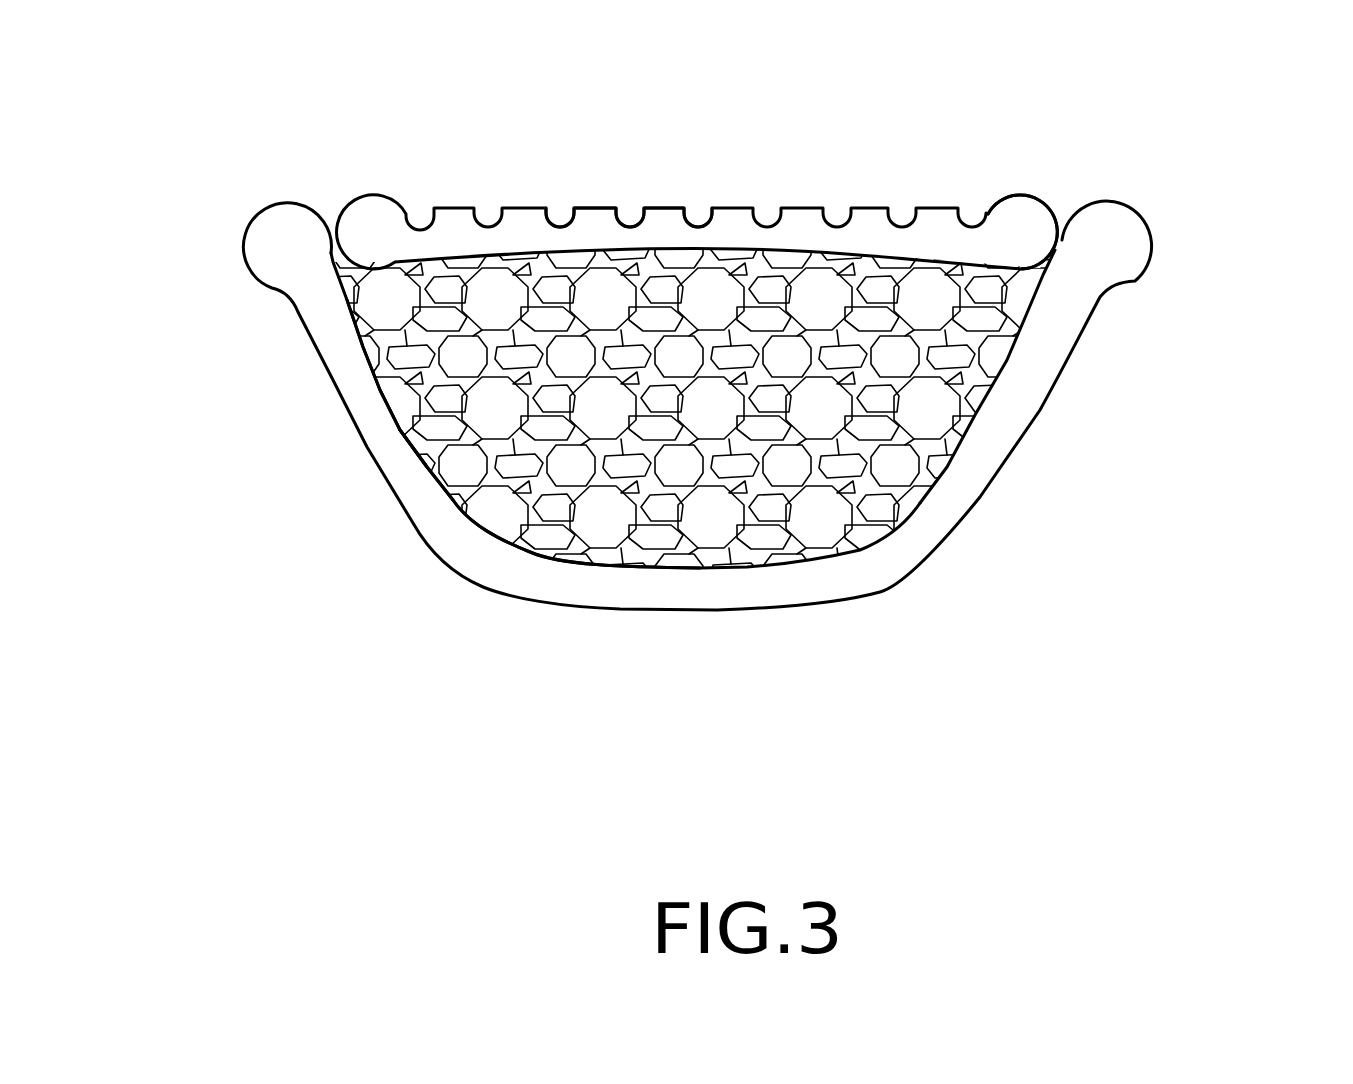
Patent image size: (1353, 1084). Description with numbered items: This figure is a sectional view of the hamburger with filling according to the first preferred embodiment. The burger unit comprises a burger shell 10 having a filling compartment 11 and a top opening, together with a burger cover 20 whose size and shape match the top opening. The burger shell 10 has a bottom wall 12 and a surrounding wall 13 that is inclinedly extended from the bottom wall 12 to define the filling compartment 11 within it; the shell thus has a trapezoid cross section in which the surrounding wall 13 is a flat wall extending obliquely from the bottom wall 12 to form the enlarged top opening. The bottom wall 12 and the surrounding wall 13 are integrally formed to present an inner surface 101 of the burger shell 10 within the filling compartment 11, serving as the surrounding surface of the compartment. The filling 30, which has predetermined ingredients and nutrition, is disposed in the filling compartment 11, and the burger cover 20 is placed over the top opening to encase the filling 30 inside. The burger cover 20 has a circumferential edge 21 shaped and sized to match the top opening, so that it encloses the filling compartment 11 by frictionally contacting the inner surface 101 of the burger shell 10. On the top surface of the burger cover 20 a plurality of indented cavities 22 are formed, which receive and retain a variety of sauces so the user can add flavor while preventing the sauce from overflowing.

The burger shell 10 is at (254, 433).
The inner surface 101 is at (390, 435).
The filling compartment 11 is at (494, 464).
The bottom wall 12 is at (767, 593).
The surrounding wall 13 is at (1033, 383).
The burger cover 20 is at (785, 235).
The circumferential edge 21 is at (1073, 234).
The indented cavity 22 is at (640, 192).
The filling 30 is at (880, 457).